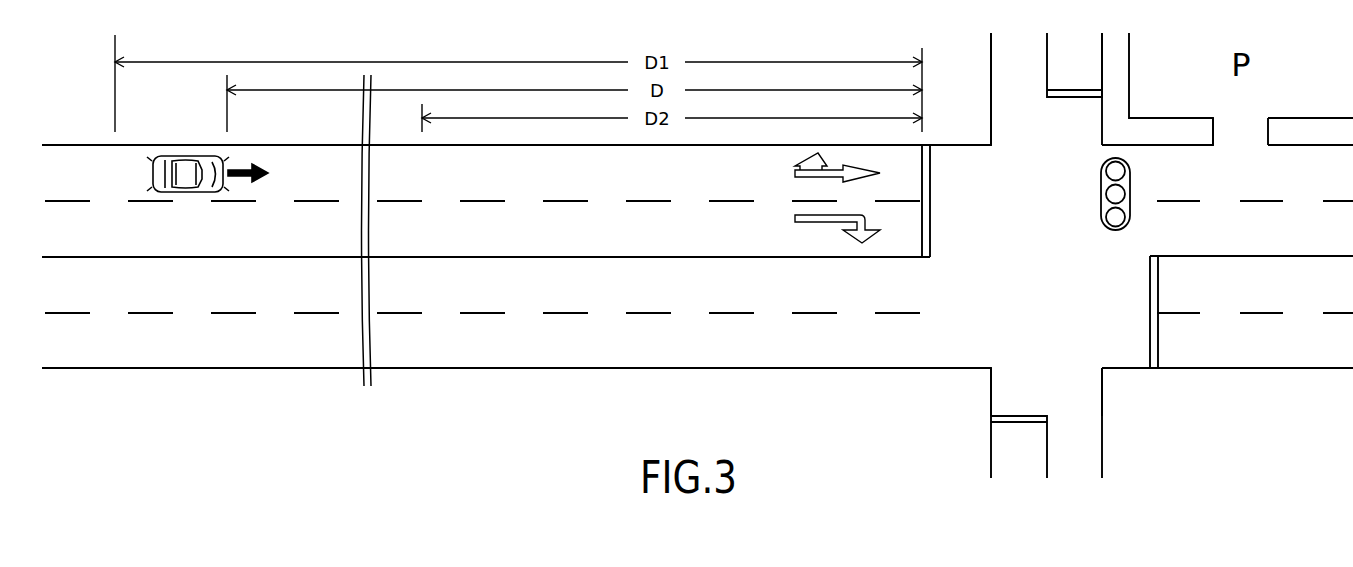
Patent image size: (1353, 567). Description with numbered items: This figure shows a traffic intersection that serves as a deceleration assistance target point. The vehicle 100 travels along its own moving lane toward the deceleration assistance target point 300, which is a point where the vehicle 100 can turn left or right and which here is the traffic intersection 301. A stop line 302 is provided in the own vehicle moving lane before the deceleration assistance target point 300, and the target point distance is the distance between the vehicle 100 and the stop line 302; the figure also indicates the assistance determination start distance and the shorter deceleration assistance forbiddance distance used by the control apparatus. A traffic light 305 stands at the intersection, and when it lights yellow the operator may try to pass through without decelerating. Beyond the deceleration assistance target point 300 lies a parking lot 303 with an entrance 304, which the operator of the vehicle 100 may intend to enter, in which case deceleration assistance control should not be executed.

The vehicle 100 is at (185, 156).
The deceleration assistance target point 300 is at (1046, 339).
The traffic intersection 301 is at (1063, 253).
The stop line 302 is at (932, 172).
The parking lot 303 is at (1188, 101).
The entrance 304 is at (1240, 130).
The traffic light 305 is at (1116, 231).